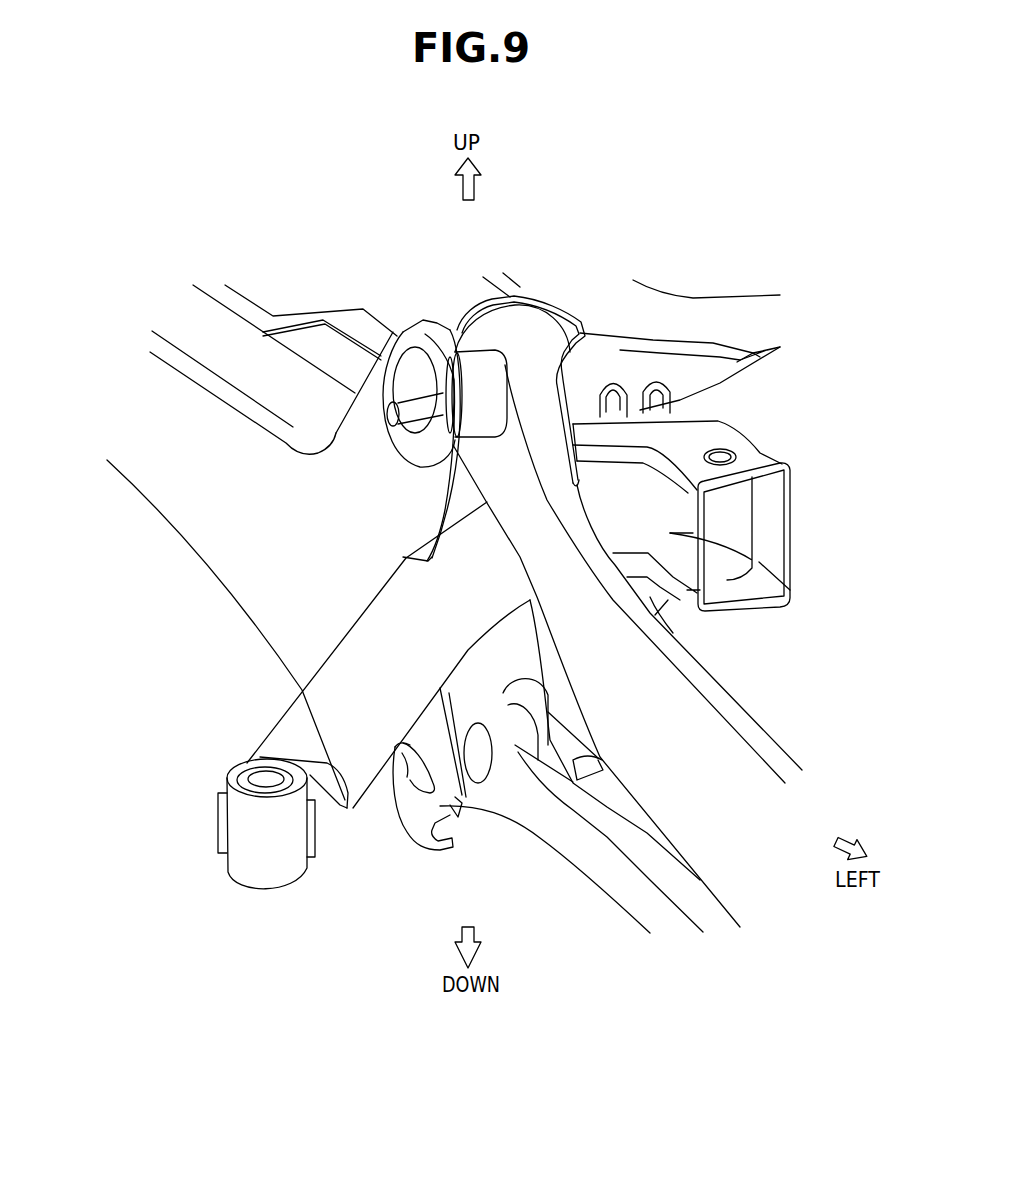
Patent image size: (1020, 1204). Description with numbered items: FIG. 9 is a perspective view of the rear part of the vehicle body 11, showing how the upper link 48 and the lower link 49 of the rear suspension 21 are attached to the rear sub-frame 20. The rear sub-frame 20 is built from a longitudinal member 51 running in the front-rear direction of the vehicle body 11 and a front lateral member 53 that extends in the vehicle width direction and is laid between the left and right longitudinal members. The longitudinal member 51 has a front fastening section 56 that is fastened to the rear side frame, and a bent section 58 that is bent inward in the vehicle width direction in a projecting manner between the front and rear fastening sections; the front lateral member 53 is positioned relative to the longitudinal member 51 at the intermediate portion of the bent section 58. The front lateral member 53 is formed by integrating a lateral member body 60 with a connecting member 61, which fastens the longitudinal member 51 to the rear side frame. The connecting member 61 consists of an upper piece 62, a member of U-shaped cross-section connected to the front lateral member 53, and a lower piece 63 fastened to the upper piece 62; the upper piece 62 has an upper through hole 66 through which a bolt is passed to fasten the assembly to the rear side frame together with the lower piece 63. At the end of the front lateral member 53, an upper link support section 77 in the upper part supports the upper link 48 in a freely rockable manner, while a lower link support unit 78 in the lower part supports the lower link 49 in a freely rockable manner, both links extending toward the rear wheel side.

The vehicle body 11 is at (147, 181).
The rear sub-frame 20 is at (162, 312).
The rear suspension 21 is at (537, 878).
The upper link 48 is at (668, 770).
The lower link 49 is at (583, 858).
The longitudinal member 51 is at (343, 670).
The front lateral member 53 is at (247, 287).
The front fastening section 56 is at (233, 773).
The bent section 58 is at (293, 707).
The lateral member body 60 is at (199, 318).
The connecting member 61 is at (738, 548).
The upper piece 62 is at (778, 580).
The lower piece 63 is at (737, 601).
The upper through hole 66 is at (727, 455).
The upper link support section 77 is at (547, 330).
The lower link support unit 78 is at (413, 803).